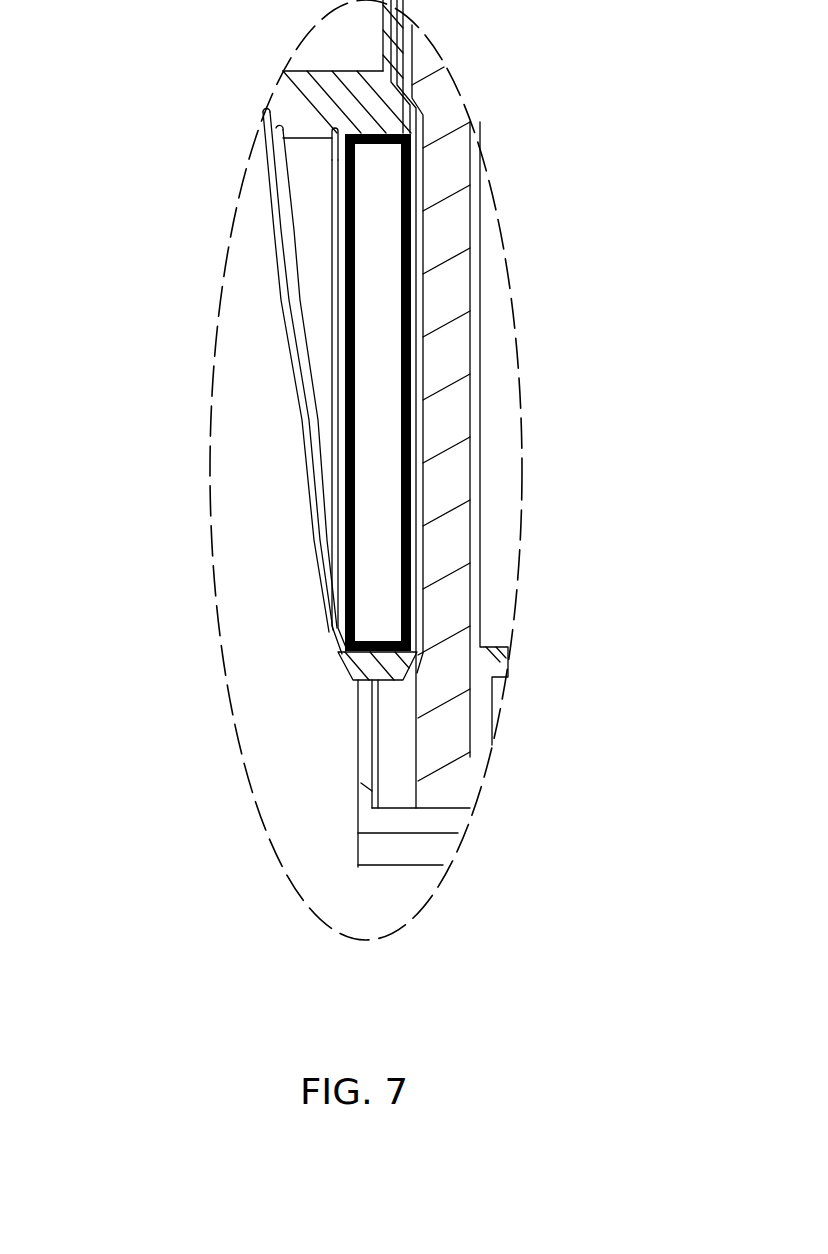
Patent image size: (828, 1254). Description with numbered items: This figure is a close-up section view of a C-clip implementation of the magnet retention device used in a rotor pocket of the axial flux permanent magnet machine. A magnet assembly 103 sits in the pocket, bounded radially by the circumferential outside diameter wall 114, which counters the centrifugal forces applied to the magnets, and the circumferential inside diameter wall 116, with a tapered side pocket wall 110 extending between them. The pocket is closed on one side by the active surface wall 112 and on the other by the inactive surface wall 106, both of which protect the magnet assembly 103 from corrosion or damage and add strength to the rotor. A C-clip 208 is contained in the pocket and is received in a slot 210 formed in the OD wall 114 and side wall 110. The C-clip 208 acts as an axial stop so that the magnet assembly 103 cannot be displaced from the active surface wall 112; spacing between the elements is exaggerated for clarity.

The magnet assembly 103 is at (378, 603).
The inactive surface wall 106 is at (292, 337).
The side pocket wall 110 is at (310, 257).
The active surface wall 112 is at (418, 505).
The circumferential outside diameter wall 114 is at (375, 663).
The circumferential inside diameter wall 116 is at (313, 97).
The C-clip 208 is at (335, 453).
The slot 210 is at (328, 135).